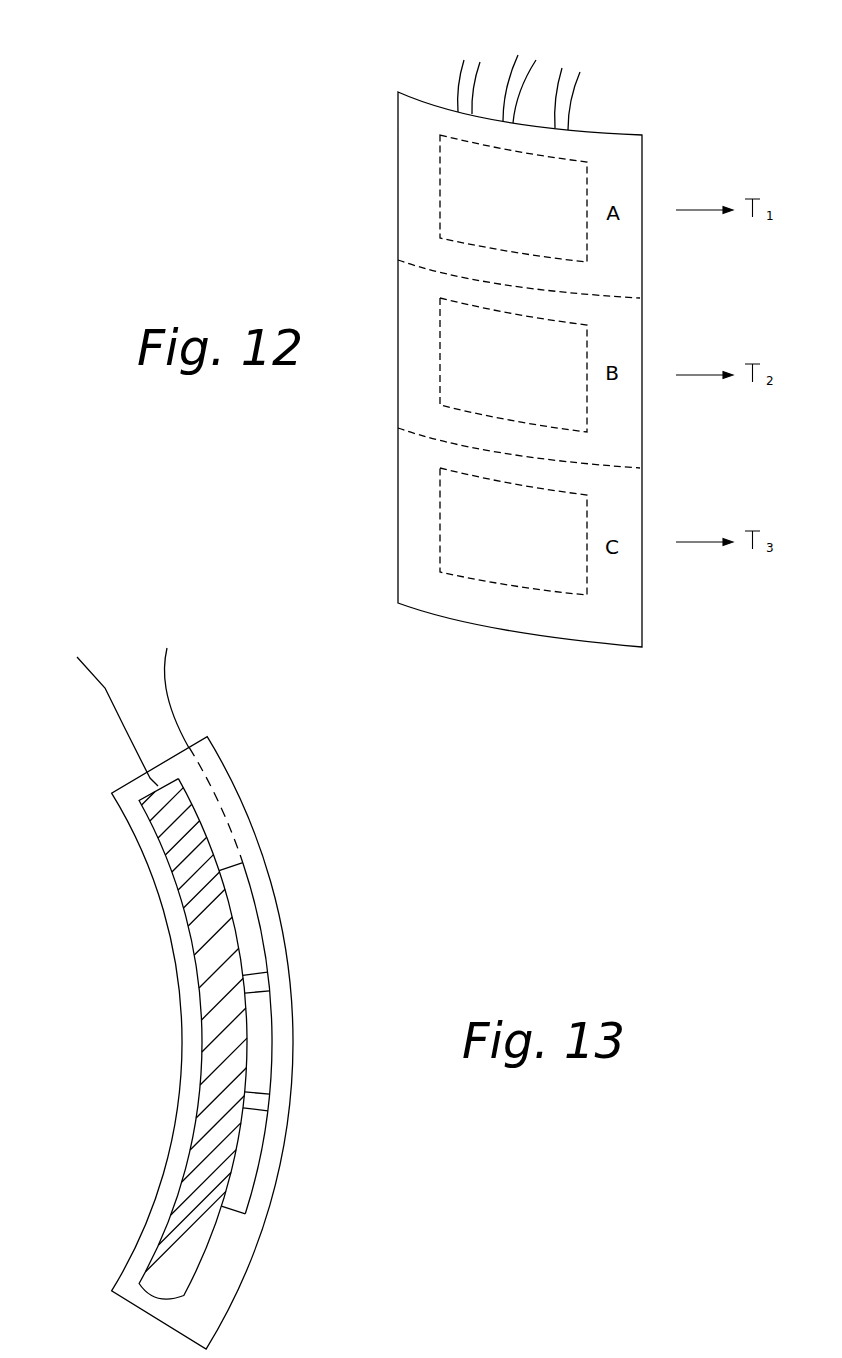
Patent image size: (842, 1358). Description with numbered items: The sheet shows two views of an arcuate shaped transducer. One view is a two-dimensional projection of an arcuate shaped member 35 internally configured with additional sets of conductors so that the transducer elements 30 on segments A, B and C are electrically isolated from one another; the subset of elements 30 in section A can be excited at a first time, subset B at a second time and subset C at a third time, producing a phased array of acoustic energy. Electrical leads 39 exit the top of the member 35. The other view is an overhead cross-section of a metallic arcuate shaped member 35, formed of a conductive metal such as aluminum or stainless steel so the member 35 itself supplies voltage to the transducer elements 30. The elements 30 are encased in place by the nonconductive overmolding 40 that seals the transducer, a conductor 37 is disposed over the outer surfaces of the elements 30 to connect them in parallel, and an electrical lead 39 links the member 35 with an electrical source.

In FIG. 12, the transducer elements 30 is at (501, 210).
In FIG. 13, the transducer elements 30 is at (248, 918).
In FIG. 12, the arcuate shaped member 35 is at (565, 633).
In FIG. 13, the arcuate shaped member 35 is at (225, 1038).
In FIG. 13, the conductor 37 is at (247, 1210).
In FIG. 12, the electrical lead 39 is at (512, 73).
In FIG. 13, the electrical lead 39 is at (105, 689).
In FIG. 13, the overmolding 40 is at (208, 1310).